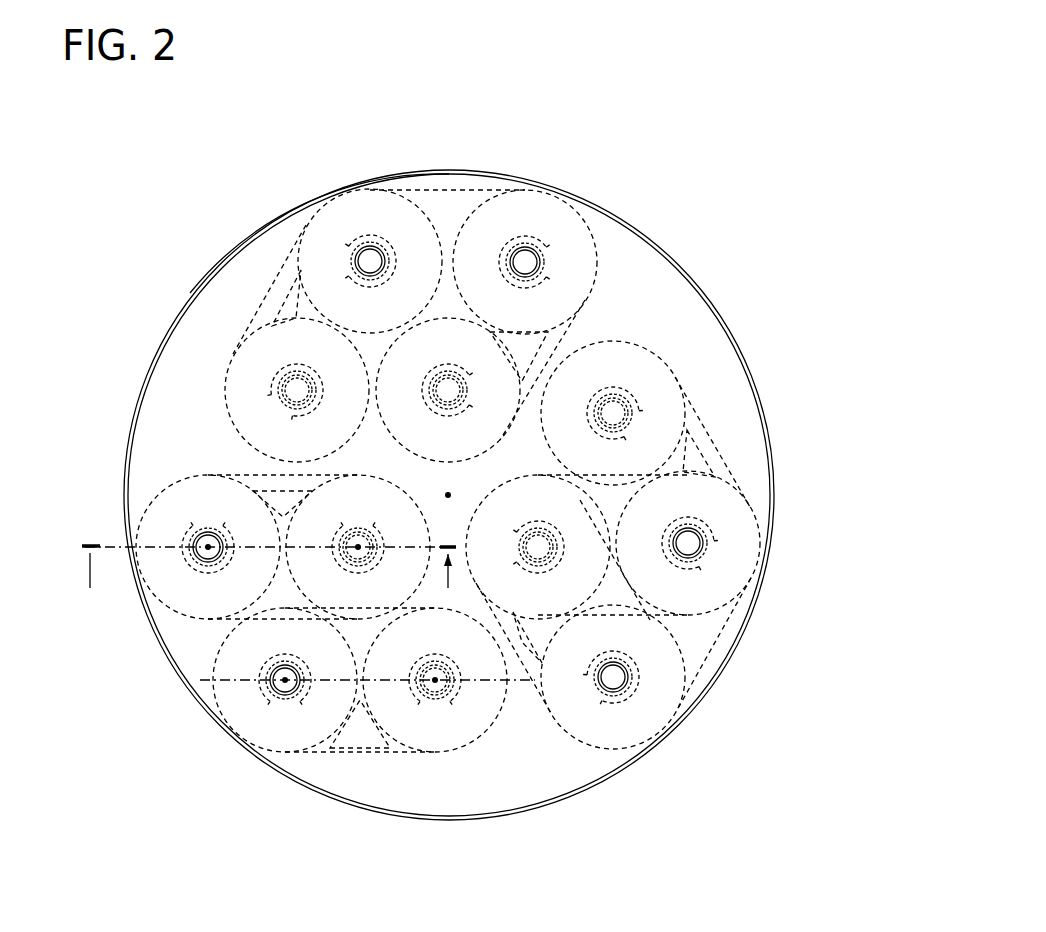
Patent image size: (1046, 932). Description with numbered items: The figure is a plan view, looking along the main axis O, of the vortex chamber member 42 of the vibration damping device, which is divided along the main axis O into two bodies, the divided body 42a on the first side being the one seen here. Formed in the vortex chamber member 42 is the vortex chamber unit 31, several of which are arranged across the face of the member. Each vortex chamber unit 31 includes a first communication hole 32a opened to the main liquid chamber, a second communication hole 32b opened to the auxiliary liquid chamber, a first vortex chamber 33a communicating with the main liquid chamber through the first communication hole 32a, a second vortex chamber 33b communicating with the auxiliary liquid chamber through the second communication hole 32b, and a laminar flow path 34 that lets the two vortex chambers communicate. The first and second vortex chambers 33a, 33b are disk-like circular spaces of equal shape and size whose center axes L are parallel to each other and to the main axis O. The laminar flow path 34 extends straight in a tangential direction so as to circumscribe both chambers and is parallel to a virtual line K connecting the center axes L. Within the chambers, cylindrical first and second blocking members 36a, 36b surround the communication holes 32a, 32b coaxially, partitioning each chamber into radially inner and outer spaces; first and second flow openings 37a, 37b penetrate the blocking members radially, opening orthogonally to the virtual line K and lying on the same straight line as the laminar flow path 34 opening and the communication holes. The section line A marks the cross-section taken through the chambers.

The vortex chamber member 42 is at (586, 191).
The divided body 42a is at (190, 293).
The vortex chamber unit 31 is at (284, 257).
The laminar flow path 34 is at (710, 447).
The first communication hole 32a is at (700, 538).
The second communication hole 32b is at (625, 415).
The first vortex chamber 33a is at (699, 499).
The second vortex chamber 33b is at (614, 386).
The first blocking member 36a is at (705, 565).
The second blocking member 36b is at (618, 372).
The first flow opening 37a is at (712, 528).
The second flow opening 37b is at (628, 400).
The main axis O is at (450, 490).
The virtual line K is at (163, 586).
The center axis L is at (358, 545).
The section line A- A is at (268, 569).